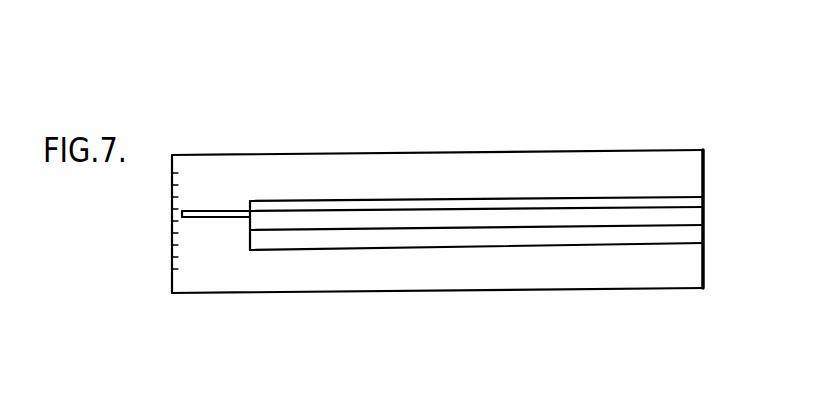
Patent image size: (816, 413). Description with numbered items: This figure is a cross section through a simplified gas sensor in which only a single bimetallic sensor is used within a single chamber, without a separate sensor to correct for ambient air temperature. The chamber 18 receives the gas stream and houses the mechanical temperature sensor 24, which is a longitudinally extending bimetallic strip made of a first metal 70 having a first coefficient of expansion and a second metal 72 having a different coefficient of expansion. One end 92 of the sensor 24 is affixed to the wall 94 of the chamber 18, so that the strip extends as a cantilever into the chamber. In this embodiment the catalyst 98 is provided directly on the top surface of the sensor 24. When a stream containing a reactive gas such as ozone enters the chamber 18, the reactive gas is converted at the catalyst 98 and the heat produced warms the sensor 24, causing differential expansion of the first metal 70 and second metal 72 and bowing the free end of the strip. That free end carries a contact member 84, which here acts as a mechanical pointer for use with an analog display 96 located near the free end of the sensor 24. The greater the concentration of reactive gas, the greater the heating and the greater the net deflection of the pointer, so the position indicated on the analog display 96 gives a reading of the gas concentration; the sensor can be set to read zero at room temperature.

The second chamber 18 is at (573, 168).
The mechanical temperature sensor 24 is at (500, 188).
The first metal 70 is at (312, 240).
The second metal 72 is at (335, 225).
The contact member 84 is at (228, 211).
The end of sensor 92 is at (697, 245).
The wall 94 is at (705, 167).
The analog display 96 is at (183, 192).
The catalyst 98 is at (418, 200).